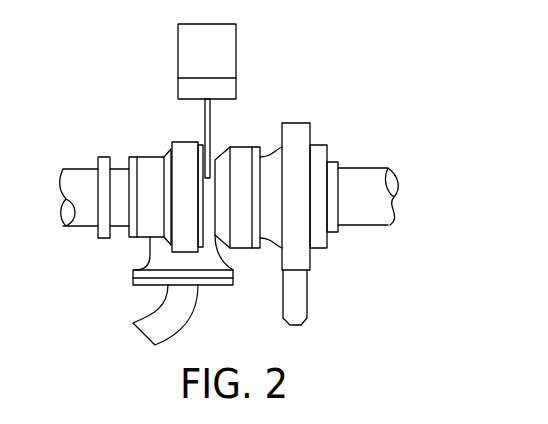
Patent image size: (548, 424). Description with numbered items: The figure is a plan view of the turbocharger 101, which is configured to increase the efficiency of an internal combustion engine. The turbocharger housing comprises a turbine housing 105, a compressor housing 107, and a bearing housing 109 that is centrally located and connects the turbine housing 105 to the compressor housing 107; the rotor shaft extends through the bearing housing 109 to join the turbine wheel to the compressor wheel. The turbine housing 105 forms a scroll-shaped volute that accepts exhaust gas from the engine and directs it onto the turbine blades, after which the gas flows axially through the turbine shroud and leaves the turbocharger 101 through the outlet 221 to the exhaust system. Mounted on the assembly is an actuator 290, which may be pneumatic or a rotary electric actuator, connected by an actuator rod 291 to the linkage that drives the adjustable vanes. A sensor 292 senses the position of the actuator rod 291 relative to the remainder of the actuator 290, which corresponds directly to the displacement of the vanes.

The turbocharger 101 is at (230, 182).
The turbine housing 105 is at (170, 147).
The compressor housing 107 is at (311, 133).
The bearing housing 109 is at (248, 248).
The outlet 221 is at (88, 168).
The actuator 290 is at (237, 47).
The actuator rod 291 is at (211, 127).
The sensor 292 is at (177, 87).